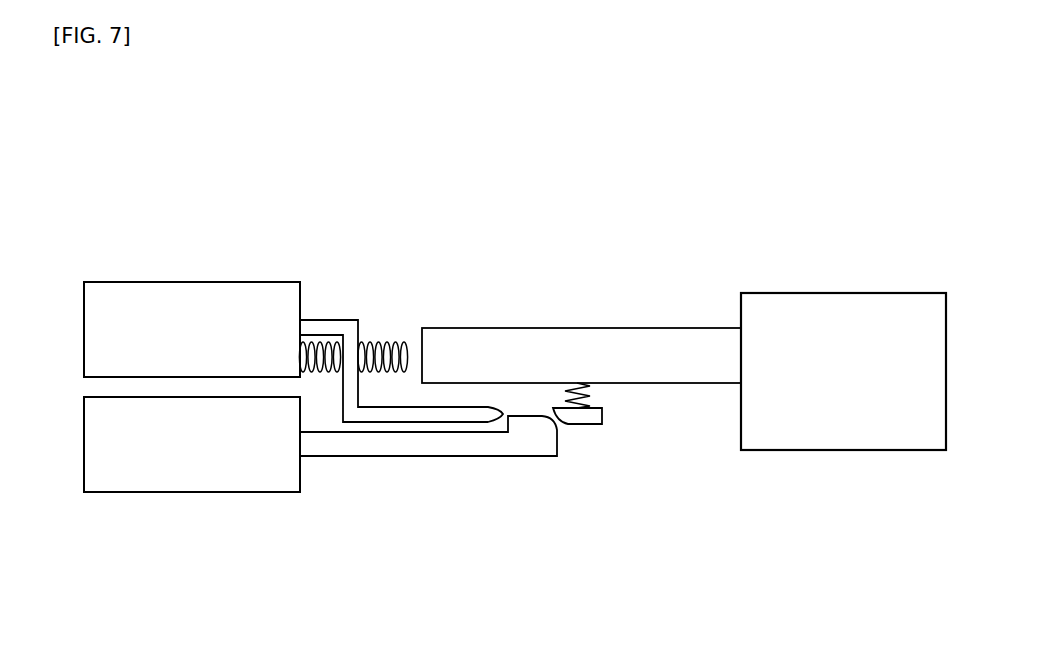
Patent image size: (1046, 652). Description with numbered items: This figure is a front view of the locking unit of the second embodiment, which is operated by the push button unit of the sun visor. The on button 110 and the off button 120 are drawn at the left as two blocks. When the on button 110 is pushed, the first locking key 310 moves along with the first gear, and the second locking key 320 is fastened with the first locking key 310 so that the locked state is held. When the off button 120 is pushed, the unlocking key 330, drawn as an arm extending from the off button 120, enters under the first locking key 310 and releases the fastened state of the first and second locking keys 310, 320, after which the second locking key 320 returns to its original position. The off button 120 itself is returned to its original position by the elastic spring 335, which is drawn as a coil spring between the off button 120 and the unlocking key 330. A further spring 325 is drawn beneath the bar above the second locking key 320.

The on button 110 is at (218, 482).
The off button 120 is at (215, 295).
The first locking key 310 is at (520, 425).
The second locking key 320 is at (587, 427).
The return spring 325 is at (573, 383).
The unlocking key 330 is at (443, 412).
The elastic spring 335 is at (363, 340).